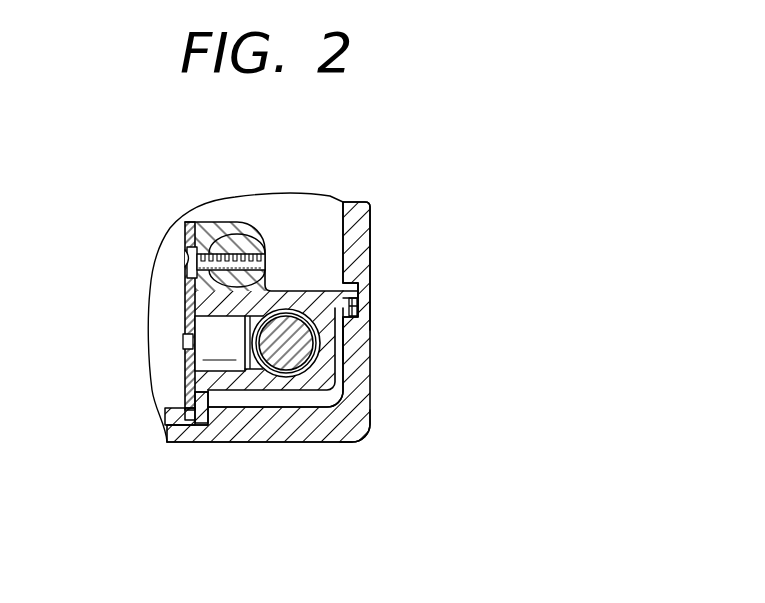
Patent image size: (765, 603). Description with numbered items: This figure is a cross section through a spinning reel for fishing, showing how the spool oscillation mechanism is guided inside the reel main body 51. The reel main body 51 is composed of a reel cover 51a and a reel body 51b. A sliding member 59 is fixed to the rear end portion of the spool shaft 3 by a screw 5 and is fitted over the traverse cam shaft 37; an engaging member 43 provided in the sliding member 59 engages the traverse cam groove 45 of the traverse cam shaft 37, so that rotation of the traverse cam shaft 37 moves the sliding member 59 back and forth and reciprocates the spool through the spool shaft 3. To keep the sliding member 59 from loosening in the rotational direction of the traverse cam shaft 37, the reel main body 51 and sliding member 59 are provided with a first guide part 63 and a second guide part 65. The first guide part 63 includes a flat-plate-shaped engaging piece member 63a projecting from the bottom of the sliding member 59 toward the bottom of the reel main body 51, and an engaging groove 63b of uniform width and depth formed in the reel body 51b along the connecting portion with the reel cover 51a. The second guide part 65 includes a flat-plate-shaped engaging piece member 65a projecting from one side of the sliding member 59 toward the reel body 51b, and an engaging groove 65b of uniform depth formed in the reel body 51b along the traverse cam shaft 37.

The spool shaft 3 is at (239, 238).
The screw 5 is at (187, 255).
The traverse cam shaft 37 is at (285, 356).
The engaging member 43 is at (187, 327).
The traverse cam groove 45 is at (330, 403).
The reel main body 51 is at (371, 385).
The reel cover 51a is at (173, 443).
The reel body 51b is at (365, 410).
The sliding member 59 is at (340, 362).
The first guide part 63 is at (188, 418).
The engaging piece member 63a is at (194, 393).
The engaging groove 63b is at (208, 403).
The second guide part 65 is at (370, 261).
The engaging piece member 65a is at (347, 298).
The engaging groove 65b is at (349, 312).